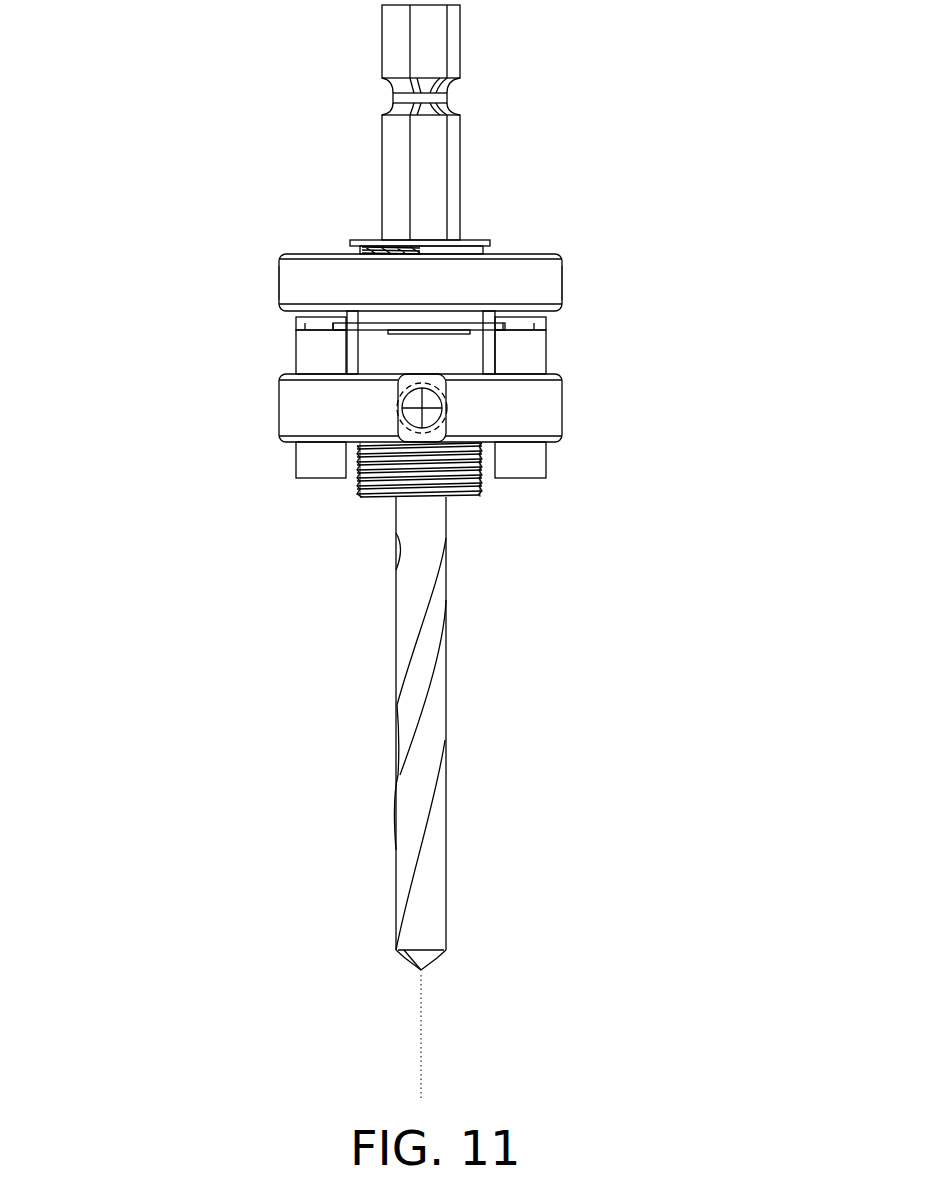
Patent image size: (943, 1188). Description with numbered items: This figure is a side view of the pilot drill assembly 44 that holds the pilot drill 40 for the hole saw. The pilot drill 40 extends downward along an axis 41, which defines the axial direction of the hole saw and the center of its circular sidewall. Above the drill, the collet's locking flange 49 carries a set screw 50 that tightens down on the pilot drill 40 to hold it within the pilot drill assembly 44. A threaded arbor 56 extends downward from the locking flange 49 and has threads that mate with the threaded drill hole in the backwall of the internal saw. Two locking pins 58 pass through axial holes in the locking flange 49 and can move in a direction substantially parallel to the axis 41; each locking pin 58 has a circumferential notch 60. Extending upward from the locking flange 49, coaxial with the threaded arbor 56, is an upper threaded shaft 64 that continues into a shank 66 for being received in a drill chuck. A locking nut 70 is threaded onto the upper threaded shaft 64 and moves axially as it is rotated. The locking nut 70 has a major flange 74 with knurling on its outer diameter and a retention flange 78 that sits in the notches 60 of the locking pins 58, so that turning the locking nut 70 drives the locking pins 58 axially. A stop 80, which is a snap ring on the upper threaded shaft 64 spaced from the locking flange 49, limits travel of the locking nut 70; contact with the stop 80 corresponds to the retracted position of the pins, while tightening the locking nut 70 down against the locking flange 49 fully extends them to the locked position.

The pilot drill 40 is at (435, 923).
The axis 41 is at (421, 1060).
The pilot drill assembly 44 is at (590, 350).
The locking flange 49 is at (534, 424).
The set screw 50 is at (412, 404).
The threaded arbor 56 is at (482, 497).
The locking pins 58 is at (311, 460).
The circumferential notch 60 is at (296, 328).
The upper threaded shaft 64 is at (457, 354).
The shank 66 is at (460, 158).
The locking nut 70 is at (530, 272).
The major flange 74 is at (562, 287).
The retention flange 78 is at (372, 322).
The stop 80 is at (367, 240).